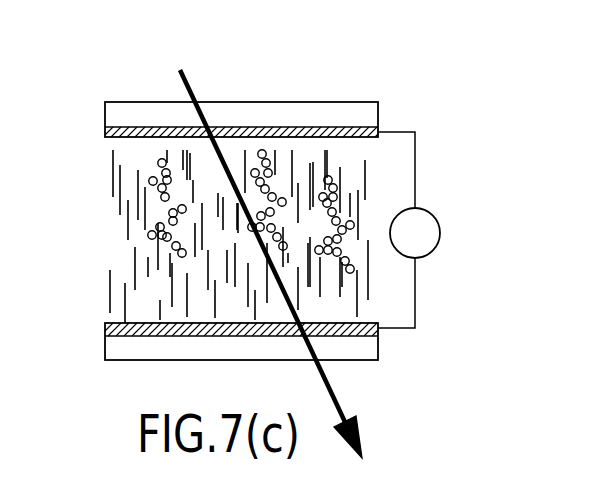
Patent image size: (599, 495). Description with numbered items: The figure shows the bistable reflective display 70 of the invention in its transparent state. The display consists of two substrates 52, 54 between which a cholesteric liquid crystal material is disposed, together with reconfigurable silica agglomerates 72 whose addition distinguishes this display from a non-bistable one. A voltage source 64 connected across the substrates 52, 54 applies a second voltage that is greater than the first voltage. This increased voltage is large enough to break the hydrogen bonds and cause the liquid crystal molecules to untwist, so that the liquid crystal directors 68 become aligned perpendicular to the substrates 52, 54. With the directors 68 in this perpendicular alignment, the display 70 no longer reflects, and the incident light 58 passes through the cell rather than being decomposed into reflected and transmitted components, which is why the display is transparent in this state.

The substrate 52 is at (104, 118).
The substrate 54 is at (105, 352).
The incident light 58 is at (193, 87).
The voltage source 64 is at (433, 214).
The liquid crystal directors 68 is at (108, 293).
The bistable reflective display 70 is at (273, 80).
The reconfigurable silica agglomerates 72 is at (152, 236).